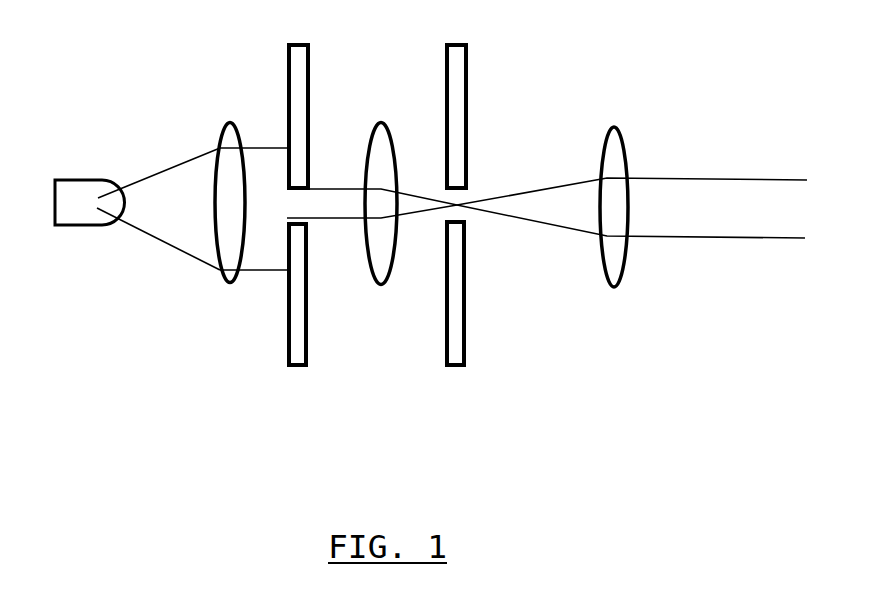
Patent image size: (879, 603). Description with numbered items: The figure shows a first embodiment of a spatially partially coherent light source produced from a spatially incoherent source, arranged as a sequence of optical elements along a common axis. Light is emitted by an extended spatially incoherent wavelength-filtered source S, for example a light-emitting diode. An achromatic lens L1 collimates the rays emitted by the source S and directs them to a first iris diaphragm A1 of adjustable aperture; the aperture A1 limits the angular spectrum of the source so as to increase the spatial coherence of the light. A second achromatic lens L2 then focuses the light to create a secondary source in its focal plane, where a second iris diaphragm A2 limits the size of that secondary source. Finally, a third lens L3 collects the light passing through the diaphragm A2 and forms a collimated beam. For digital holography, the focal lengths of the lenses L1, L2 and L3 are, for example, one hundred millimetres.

The extended spatially incoherent wavelength-filtered source S is at (90, 177).
The achromatic lens L1 is at (226, 235).
The first iris diaphragm A1 is at (299, 182).
The second achromatic lens L2 is at (378, 238).
The second iris diaphragm A2 is at (454, 182).
The third lens L3 is at (612, 237).